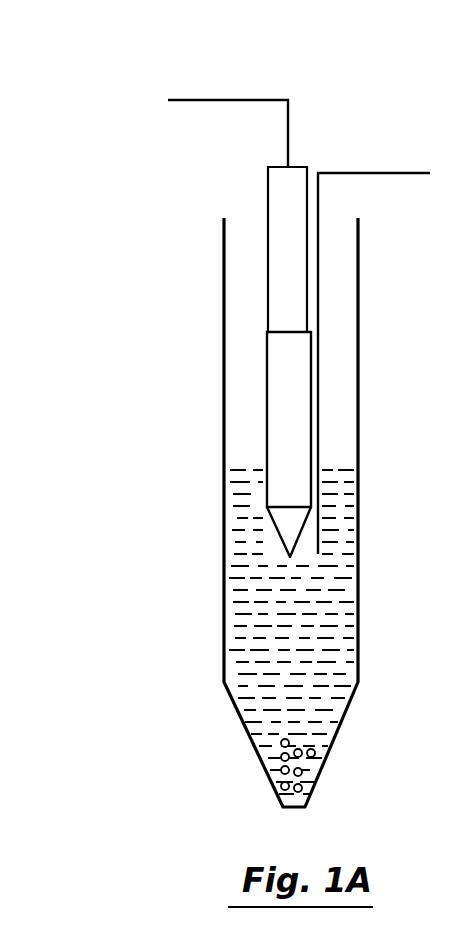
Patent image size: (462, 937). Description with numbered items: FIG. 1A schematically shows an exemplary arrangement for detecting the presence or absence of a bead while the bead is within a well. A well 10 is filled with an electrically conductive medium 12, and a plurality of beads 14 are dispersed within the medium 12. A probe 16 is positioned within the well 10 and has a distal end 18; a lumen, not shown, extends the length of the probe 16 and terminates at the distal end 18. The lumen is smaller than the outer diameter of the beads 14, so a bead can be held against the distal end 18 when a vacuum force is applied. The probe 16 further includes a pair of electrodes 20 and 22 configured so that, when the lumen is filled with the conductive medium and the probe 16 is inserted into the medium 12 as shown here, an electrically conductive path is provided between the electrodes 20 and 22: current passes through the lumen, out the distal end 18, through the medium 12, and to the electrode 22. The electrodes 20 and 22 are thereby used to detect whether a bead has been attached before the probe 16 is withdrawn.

The well 10 is at (362, 545).
The electrically conductive medium 12 is at (332, 618).
The beads 14 is at (315, 753).
The probe 16 is at (292, 388).
The distal end 18 is at (288, 526).
The electrode 20 is at (218, 100).
The electrode 22 is at (322, 413).